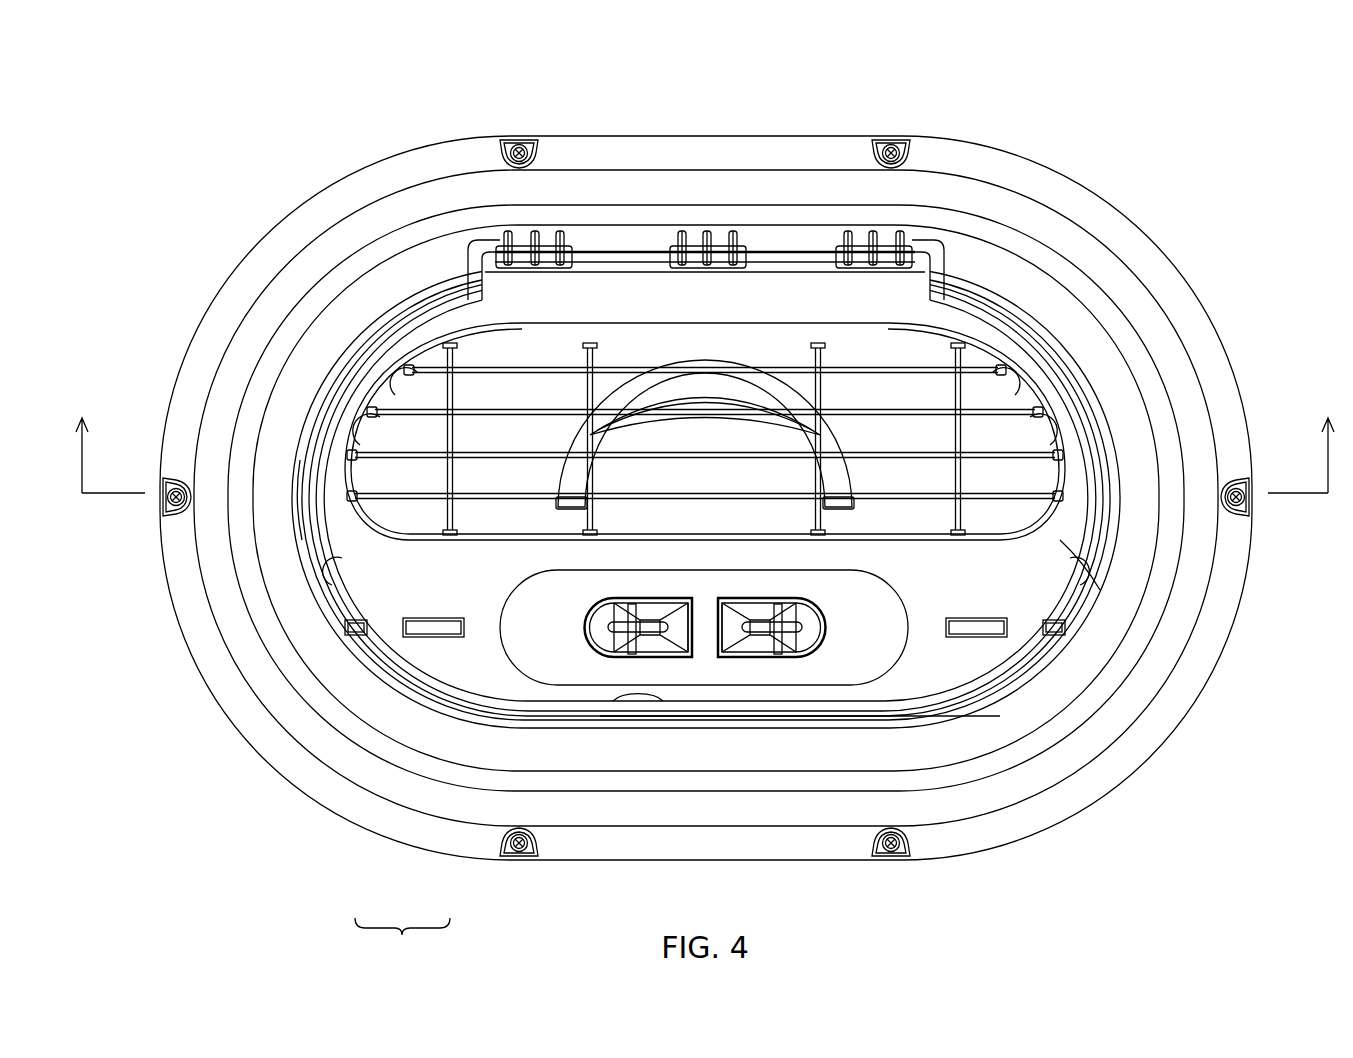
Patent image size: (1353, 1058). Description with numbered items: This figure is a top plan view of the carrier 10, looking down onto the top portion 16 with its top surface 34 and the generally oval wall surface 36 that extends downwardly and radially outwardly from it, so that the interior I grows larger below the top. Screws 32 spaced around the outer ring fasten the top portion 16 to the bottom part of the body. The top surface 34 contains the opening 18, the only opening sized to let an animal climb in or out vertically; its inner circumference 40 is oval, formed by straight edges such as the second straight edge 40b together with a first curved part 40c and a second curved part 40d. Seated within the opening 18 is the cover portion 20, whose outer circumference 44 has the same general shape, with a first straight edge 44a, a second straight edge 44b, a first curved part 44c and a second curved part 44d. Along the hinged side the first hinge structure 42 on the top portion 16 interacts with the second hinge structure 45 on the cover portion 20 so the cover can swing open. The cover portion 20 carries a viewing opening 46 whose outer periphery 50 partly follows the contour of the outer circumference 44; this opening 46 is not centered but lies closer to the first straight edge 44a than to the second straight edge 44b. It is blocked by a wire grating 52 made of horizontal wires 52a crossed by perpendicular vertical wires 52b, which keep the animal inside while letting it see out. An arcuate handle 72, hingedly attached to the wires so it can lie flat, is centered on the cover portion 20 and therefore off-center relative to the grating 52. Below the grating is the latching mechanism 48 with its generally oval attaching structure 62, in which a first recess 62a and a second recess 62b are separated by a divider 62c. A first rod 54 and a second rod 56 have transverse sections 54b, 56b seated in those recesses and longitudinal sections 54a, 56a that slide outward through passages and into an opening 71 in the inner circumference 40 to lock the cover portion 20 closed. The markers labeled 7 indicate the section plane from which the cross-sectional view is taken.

The carrier 10 is at (993, 112).
The top portion 16 is at (1125, 220).
The opening 18 is at (1095, 425).
The cover portion 20 is at (407, 367).
The screws 32 is at (519, 140).
The top surface 34 is at (982, 285).
The wall surface 36 is at (343, 803).
The inner circumference 40 is at (1090, 487).
The second straight edge 40b is at (640, 696).
The first curved part 40c is at (1090, 585).
The second curved part 40d is at (345, 592).
The first hinge structure 42 is at (765, 252).
The outer circumference 44 is at (1050, 335).
The first straight edge 44a is at (800, 263).
The second straight edge 44b is at (800, 716).
The first curved part 44c is at (1118, 556).
The second curved part 44d is at (296, 505).
The second hinge structure 45 is at (505, 240).
The opening 46 is at (370, 422).
The latching mechanism 48 is at (1002, 722).
The outer periphery 50 is at (358, 392).
The wire grating 52 is at (402, 940).
The horizontal wires 52a is at (492, 503).
The vertical wires 52b is at (455, 542).
The first rod 54 is at (430, 618).
The longitudinal section 54a is at (362, 620).
The transverse section 54b is at (612, 625).
The second rod 56 is at (1003, 637).
The longitudinal section 56a is at (1050, 620).
The transverse section 56b is at (795, 625).
The attaching structure 62 is at (870, 612).
The first recess 62a is at (805, 637).
The second recess 62b is at (597, 630).
The divider 62c is at (705, 618).
The opening 71 is at (355, 637).
The handle 72 is at (722, 368).
The section line 7 is at (706, 438).
The interior I is at (483, 390).